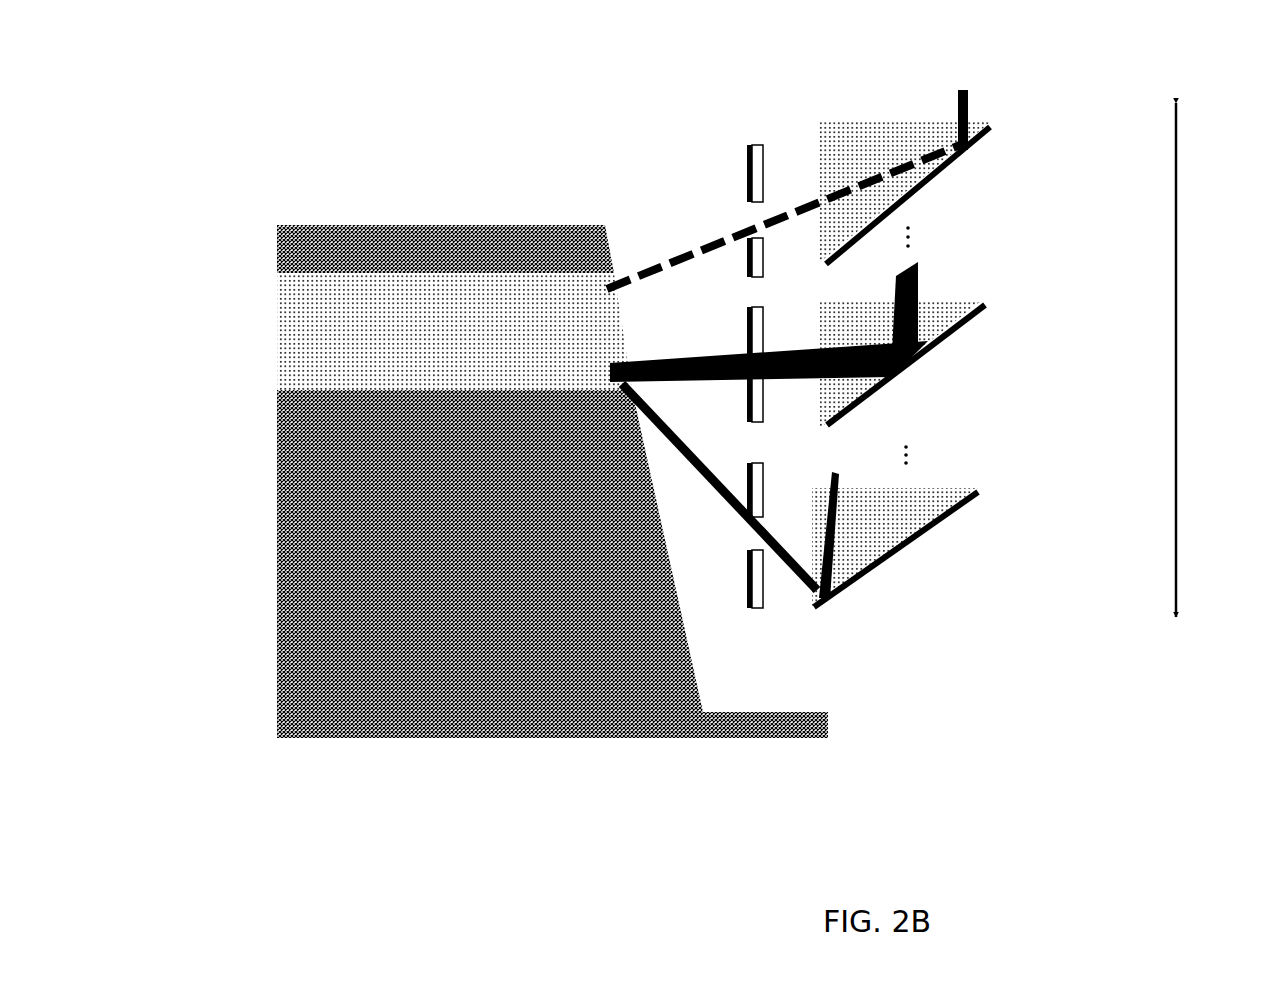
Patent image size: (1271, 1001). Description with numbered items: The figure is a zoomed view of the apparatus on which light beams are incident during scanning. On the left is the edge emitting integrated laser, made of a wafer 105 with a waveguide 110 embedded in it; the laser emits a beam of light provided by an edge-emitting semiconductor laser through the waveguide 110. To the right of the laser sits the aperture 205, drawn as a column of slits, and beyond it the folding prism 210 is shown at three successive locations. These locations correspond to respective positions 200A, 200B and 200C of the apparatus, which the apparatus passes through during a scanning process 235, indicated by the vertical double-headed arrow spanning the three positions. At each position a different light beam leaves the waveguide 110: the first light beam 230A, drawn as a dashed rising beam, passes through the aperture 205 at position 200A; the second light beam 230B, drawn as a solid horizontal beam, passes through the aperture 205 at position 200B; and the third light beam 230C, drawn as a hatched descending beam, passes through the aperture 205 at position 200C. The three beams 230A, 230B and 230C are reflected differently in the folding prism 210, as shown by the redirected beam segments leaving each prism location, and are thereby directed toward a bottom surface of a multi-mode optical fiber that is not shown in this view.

The wafer 105 is at (277, 460).
The waveguide 110 is at (277, 370).
The first position of the apparatus 200A is at (1030, 97).
The second position of the apparatus 200B is at (956, 331).
The third position of the apparatus 200C is at (1003, 509).
The aperture 205 is at (770, 392).
The folding prism 210 is at (948, 313).
The first light beam 230A is at (675, 250).
The second light beam 230B is at (715, 358).
The third light beam 230C is at (731, 497).
The scanning process 235 is at (1176, 262).